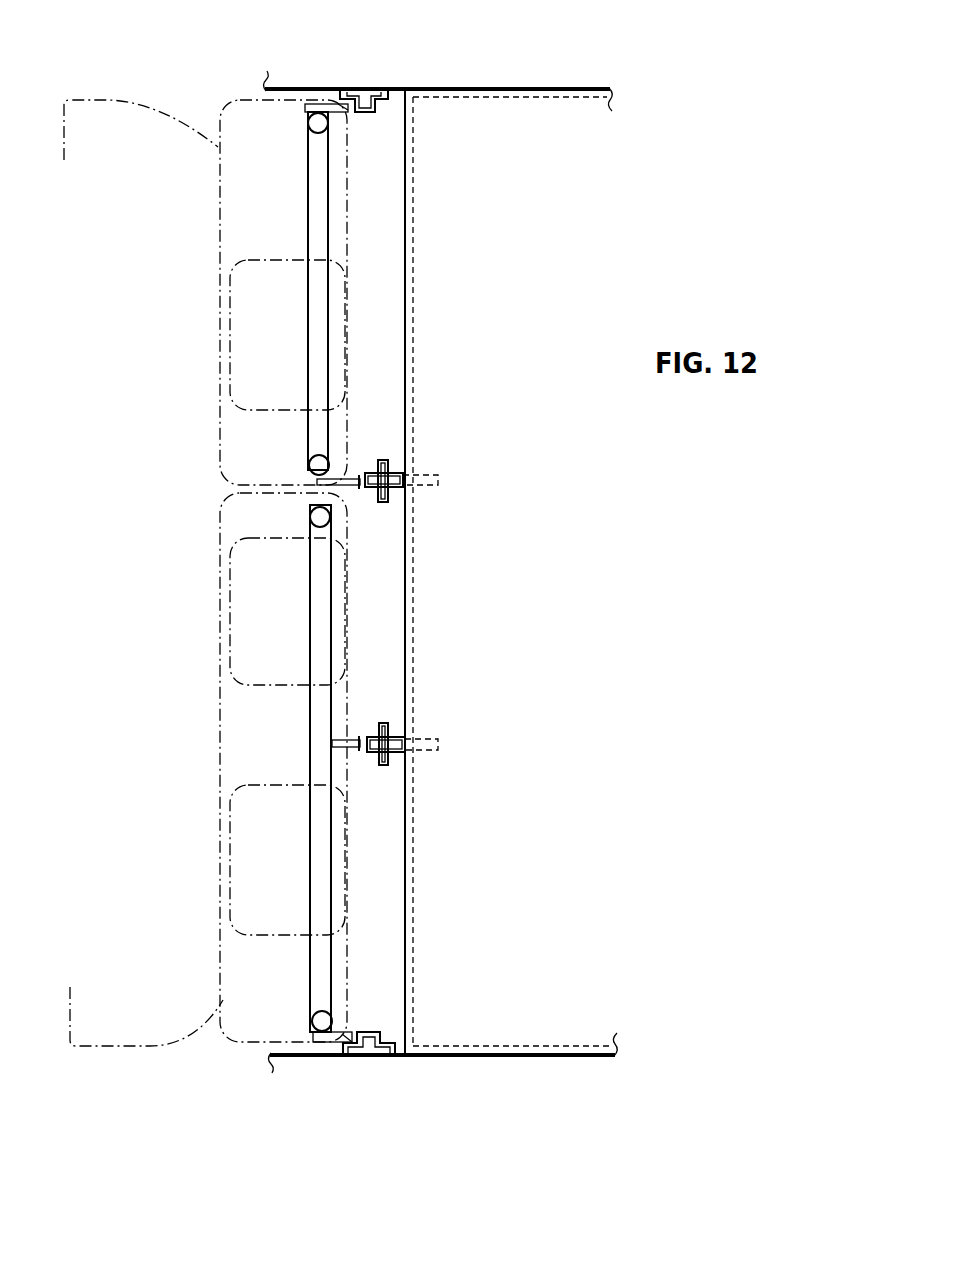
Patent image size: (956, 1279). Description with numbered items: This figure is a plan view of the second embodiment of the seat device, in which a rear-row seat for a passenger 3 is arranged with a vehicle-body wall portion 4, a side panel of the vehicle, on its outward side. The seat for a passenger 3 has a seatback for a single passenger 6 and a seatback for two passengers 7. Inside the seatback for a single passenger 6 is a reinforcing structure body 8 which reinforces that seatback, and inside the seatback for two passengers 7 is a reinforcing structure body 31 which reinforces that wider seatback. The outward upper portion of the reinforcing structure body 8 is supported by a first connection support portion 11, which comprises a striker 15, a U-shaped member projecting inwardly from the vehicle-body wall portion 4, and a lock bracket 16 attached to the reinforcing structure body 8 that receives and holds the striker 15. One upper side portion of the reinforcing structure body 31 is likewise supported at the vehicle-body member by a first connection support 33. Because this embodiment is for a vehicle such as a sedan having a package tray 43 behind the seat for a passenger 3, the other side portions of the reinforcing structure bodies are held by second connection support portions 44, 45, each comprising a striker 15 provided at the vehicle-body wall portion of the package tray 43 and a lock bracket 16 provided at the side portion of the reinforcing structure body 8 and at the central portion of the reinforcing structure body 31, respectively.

The seat for a passenger 3 is at (103, 95).
The vehicle-body wall portion 4 is at (318, 87).
The seatback for a single passenger 6 is at (238, 96).
The seatback for two passengers 7 is at (223, 1042).
The reinforcing structure body 8 is at (307, 156).
The first connection support portion 11 is at (379, 107).
The striker 15 is at (376, 496).
The lock bracket 16 is at (349, 488).
The reinforcing structure body 31 is at (310, 715).
The first connection support 33 is at (394, 1030).
The package tray 43 is at (510, 107).
The second connection support portion 44 is at (380, 454).
The second connection support portion 45 is at (387, 718).